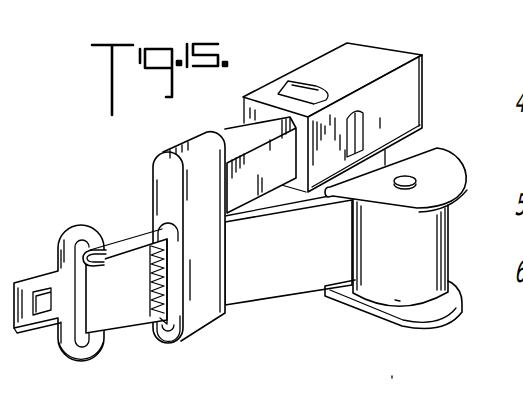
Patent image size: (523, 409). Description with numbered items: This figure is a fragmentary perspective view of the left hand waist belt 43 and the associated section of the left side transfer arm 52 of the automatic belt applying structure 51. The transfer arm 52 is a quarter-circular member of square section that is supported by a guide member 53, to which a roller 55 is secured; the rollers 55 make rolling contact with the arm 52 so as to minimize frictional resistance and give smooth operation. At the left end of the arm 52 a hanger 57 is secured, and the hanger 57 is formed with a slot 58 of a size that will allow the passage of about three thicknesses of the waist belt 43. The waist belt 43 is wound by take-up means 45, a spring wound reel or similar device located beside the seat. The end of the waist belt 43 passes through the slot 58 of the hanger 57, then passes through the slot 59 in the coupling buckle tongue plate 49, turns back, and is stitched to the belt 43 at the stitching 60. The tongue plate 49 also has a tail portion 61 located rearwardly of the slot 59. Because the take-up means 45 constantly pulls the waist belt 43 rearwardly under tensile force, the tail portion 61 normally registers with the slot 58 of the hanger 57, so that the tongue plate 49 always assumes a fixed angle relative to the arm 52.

The waist belt 43 is at (264, 286).
The take-up means 45 is at (440, 162).
The coupling buckle tongue plate 49 is at (30, 283).
The automatic belt applying structure 51 is at (397, 390).
The transfer arm 52 is at (225, 129).
The guide member 53 is at (318, 62).
The roller 55 is at (279, 92).
The hanger 57 is at (197, 134).
The slot 58 is at (171, 331).
The slot 59 is at (82, 349).
The stitching 60 is at (153, 317).
The tail portion 61 is at (110, 246).